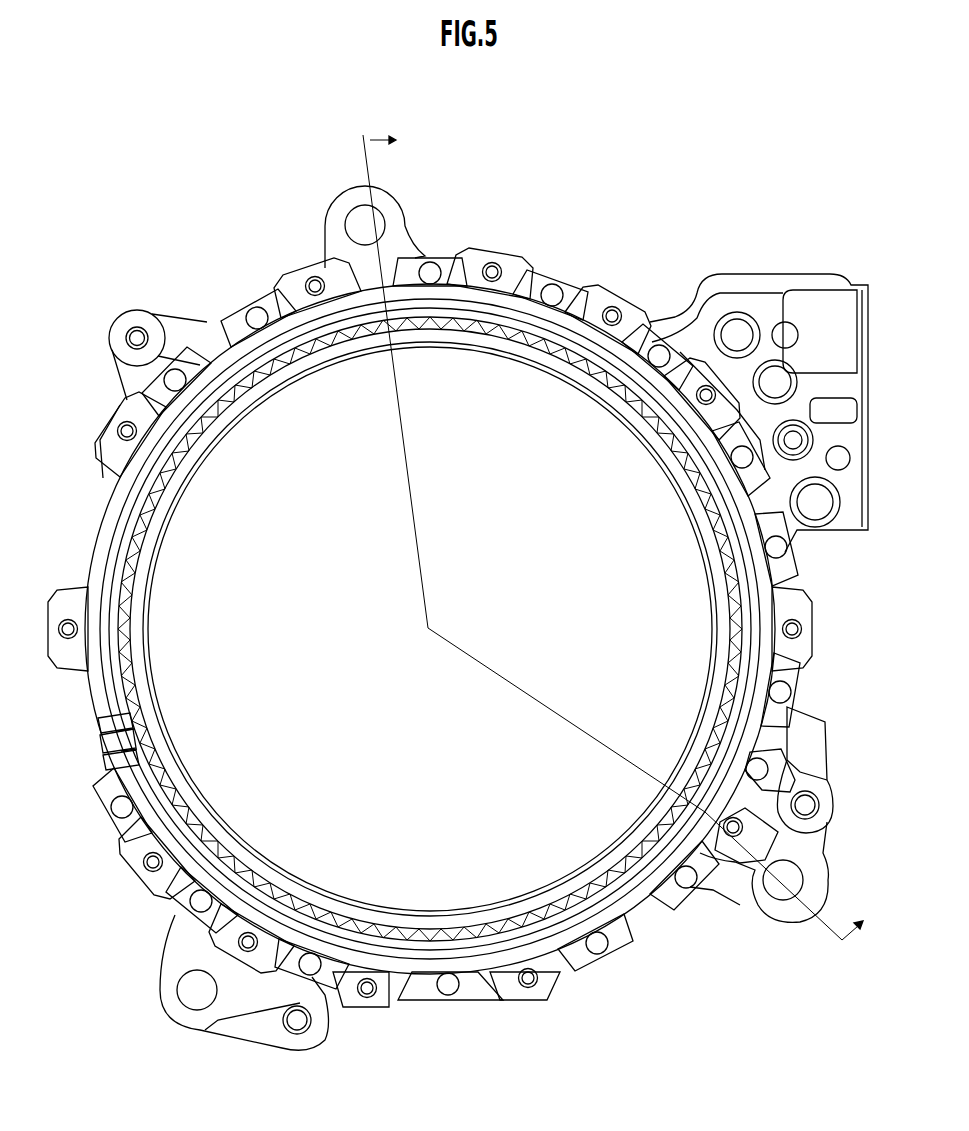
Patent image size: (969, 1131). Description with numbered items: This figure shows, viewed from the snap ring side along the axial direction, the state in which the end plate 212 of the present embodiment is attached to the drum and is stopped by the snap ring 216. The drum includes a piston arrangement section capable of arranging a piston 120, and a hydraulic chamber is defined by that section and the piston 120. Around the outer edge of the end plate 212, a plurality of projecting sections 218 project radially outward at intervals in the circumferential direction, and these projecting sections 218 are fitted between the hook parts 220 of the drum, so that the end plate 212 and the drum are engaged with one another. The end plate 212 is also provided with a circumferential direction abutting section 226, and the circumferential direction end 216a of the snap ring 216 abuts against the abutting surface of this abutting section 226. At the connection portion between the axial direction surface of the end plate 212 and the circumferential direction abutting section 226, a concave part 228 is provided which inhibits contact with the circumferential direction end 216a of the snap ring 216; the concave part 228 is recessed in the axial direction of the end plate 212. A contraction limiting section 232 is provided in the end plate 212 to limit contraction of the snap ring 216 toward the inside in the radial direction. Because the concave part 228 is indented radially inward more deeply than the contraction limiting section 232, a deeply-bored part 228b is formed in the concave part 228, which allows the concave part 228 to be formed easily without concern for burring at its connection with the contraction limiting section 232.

The piston 120 is at (233, 249).
The end plate 212 is at (112, 534).
The snap ring 216 is at (389, 975).
The circumferential direction end 216a is at (143, 722).
The projecting section 218 is at (120, 413).
The hook part 220 is at (266, 290).
The circumferential direction abutting section 226 is at (118, 748).
The concave part 228 is at (120, 737).
The deeply-bored part 228b is at (130, 740).
The contraction limiting section 232 is at (572, 958).